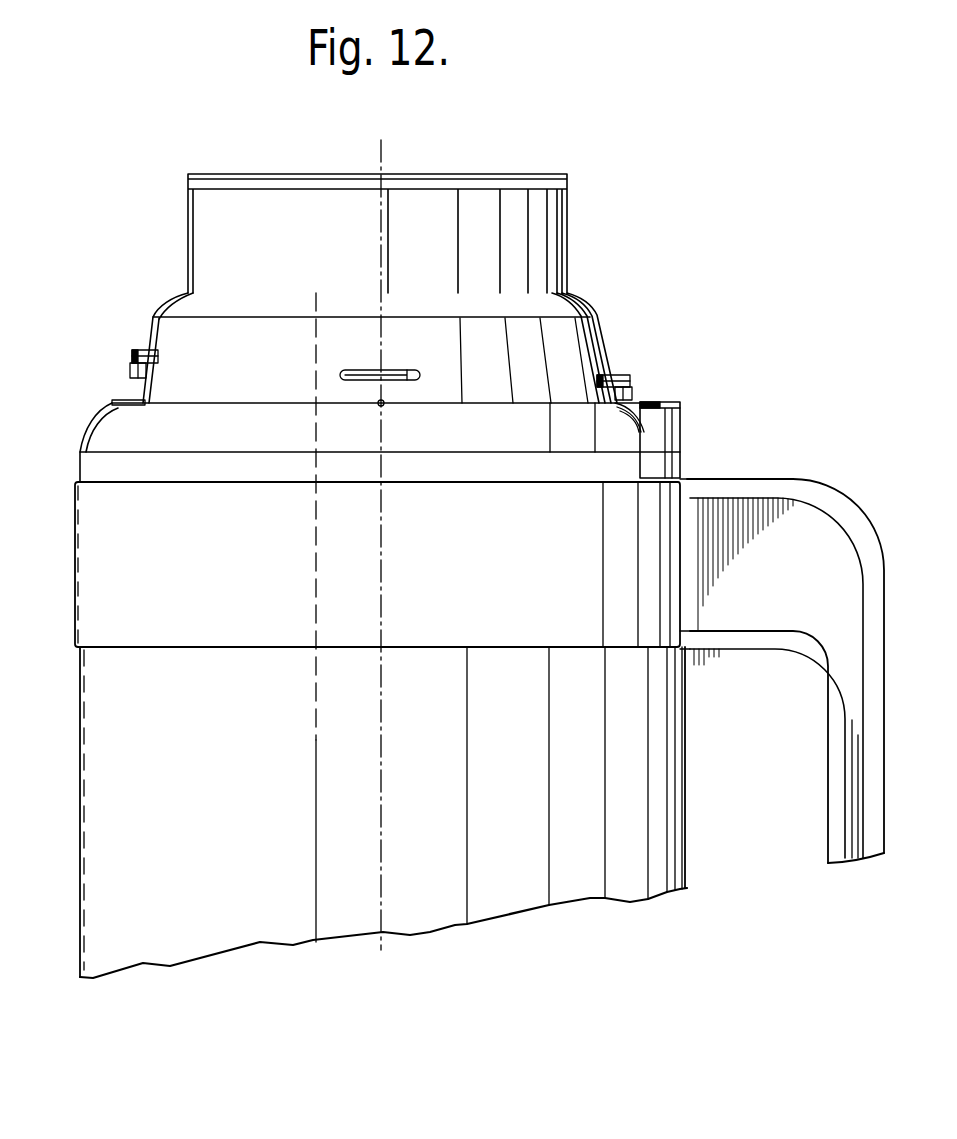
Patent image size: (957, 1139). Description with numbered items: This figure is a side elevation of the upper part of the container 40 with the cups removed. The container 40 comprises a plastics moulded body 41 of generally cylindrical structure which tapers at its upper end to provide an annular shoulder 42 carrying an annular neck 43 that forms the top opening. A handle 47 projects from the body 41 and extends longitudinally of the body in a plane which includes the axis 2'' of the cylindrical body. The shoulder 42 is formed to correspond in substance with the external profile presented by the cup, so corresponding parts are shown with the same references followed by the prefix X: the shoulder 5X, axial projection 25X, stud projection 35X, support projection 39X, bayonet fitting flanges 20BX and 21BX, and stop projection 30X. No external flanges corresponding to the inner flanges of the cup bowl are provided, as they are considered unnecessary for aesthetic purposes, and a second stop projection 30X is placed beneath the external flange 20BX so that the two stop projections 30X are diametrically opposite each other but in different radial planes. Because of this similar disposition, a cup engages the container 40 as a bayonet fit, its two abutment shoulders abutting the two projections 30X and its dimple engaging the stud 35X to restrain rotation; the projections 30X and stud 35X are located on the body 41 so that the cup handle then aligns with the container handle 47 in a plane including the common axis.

The axis of the cylindrical body 2'' is at (356, 545).
The annular neck 43 is at (188, 215).
The shoulder 5X is at (500, 398).
The annular shoulder 42 is at (165, 377).
The support projection 39X is at (345, 372).
The axial projection 25X is at (115, 401).
The bayonet fitting flange 20BX is at (138, 350).
The bayonet fitting flange 21BX is at (625, 376).
The stop projection 30X is at (132, 370).
The stud projection 35X is at (682, 412).
The body 41 is at (74, 532).
The container 40 is at (70, 566).
The handle 47 is at (823, 563).